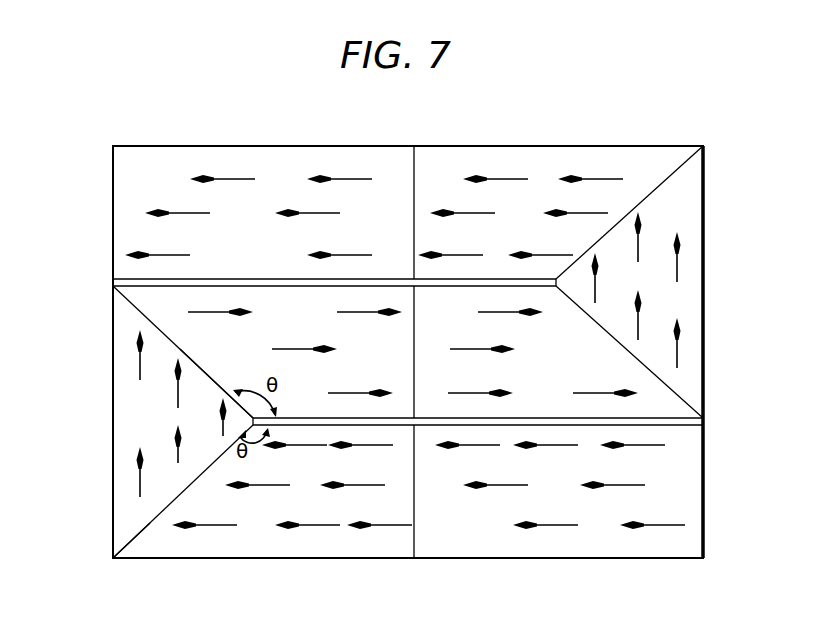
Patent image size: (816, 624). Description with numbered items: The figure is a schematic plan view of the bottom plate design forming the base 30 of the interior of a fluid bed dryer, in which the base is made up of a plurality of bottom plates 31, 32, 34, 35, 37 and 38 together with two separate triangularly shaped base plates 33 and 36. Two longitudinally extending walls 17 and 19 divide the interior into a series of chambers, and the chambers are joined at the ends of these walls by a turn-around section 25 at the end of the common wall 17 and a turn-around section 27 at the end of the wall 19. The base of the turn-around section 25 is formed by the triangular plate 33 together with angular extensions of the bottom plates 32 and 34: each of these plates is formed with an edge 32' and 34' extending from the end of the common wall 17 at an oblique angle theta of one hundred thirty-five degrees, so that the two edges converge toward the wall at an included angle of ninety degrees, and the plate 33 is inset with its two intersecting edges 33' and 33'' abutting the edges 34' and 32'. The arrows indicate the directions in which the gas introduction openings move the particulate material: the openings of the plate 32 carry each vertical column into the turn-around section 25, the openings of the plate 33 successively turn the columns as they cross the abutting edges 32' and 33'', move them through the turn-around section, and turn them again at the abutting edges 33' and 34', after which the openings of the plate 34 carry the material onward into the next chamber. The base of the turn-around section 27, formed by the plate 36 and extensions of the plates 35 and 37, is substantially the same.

The base 30 is at (592, 146).
The turn-around section 27 is at (706, 241).
The turn-around section 25 is at (104, 439).
The longitudinally extending wall 19 is at (150, 279).
The common wall 17 is at (677, 425).
The bottom plate 38 is at (304, 160).
The bottom plate 37 is at (535, 162).
The triangularly shaped base plate 36 is at (672, 300).
The bottom plate 35 is at (505, 337).
The bottom plate 34 is at (301, 352).
The edge 34' is at (183, 352).
The bottom plate 33 is at (139, 413).
The edge 33' is at (218, 383).
The edge 33'' is at (183, 491).
The bottom plate 32 is at (293, 510).
The edge 32' is at (147, 564).
The bottom plate 31 is at (600, 520).